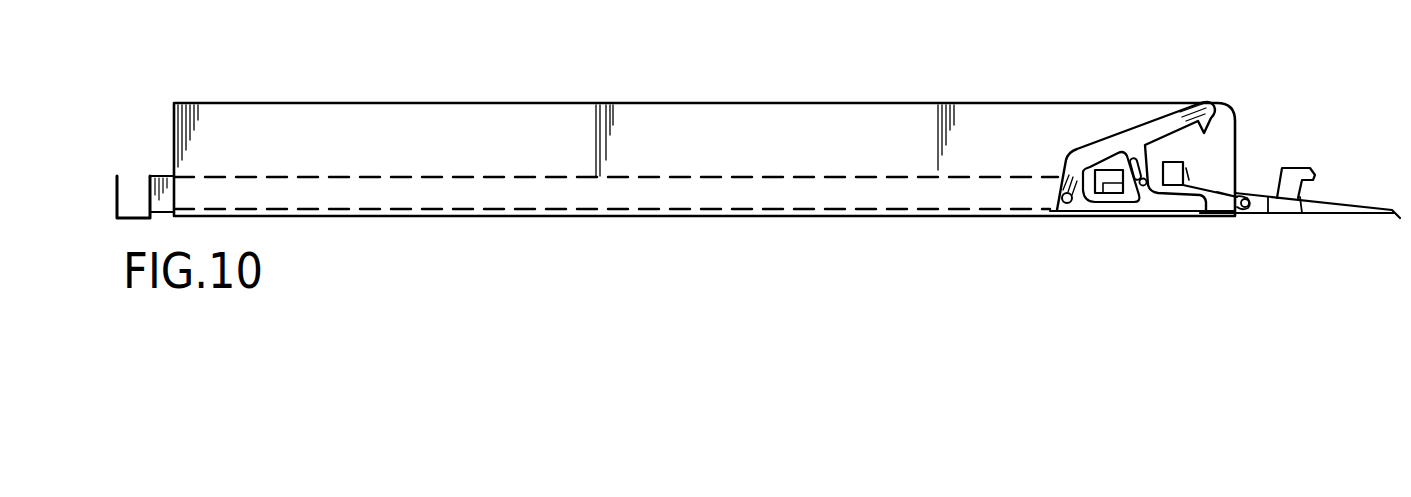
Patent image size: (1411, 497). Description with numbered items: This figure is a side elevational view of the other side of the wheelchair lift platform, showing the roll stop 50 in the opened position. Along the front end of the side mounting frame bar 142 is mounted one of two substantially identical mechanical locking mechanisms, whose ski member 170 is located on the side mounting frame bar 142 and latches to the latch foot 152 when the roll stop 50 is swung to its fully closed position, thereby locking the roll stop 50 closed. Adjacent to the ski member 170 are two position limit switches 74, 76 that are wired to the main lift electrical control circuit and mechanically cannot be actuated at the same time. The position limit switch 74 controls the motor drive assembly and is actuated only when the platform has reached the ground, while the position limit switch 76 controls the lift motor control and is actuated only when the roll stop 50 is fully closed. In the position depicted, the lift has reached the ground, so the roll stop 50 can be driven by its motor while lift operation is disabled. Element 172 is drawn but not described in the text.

The side mounting frame bar 142 is at (693, 193).
The ski member 170 is at (1130, 140).
The position limit switch 74 is at (1105, 192).
The position limit switch 76 is at (1173, 163).
The link 172 is at (1190, 215).
The roll stop 50 is at (1325, 208).
The latch foot 152 is at (1290, 177).